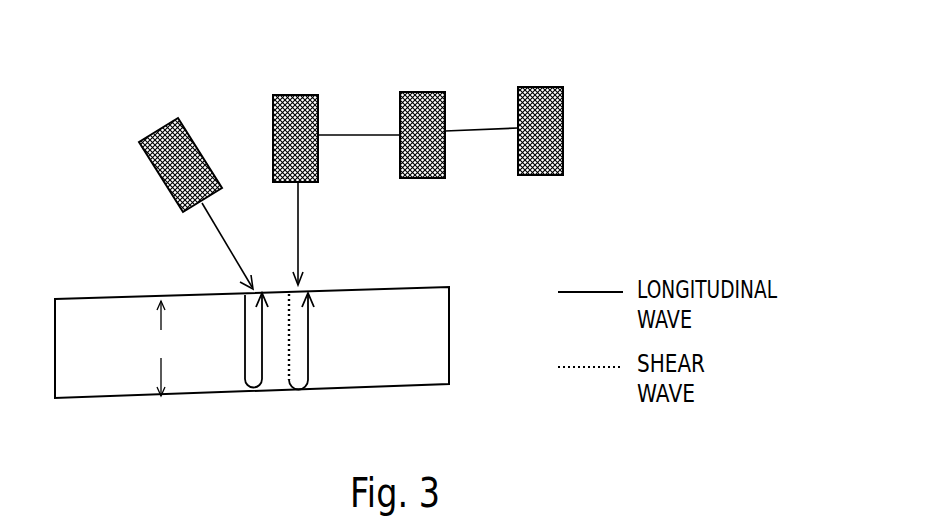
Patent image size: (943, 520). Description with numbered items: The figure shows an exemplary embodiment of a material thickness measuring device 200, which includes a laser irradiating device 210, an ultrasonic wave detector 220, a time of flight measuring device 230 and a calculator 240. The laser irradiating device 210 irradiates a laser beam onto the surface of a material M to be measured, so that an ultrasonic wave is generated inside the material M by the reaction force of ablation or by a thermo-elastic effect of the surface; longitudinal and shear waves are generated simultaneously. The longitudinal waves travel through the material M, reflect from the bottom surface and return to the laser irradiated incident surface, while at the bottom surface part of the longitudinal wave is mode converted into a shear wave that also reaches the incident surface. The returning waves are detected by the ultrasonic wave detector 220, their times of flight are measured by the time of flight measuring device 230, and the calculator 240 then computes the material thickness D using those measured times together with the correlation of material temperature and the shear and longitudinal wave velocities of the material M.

The material thickness measuring device 200 is at (195, 44).
The laser irradiating device 210 is at (147, 134).
The ultrasonic wave detector 220 is at (288, 95).
The time of flight measuring device 230 is at (412, 92).
The calculator 240 is at (532, 87).
The material M is at (410, 287).
The material thickness D is at (160, 348).